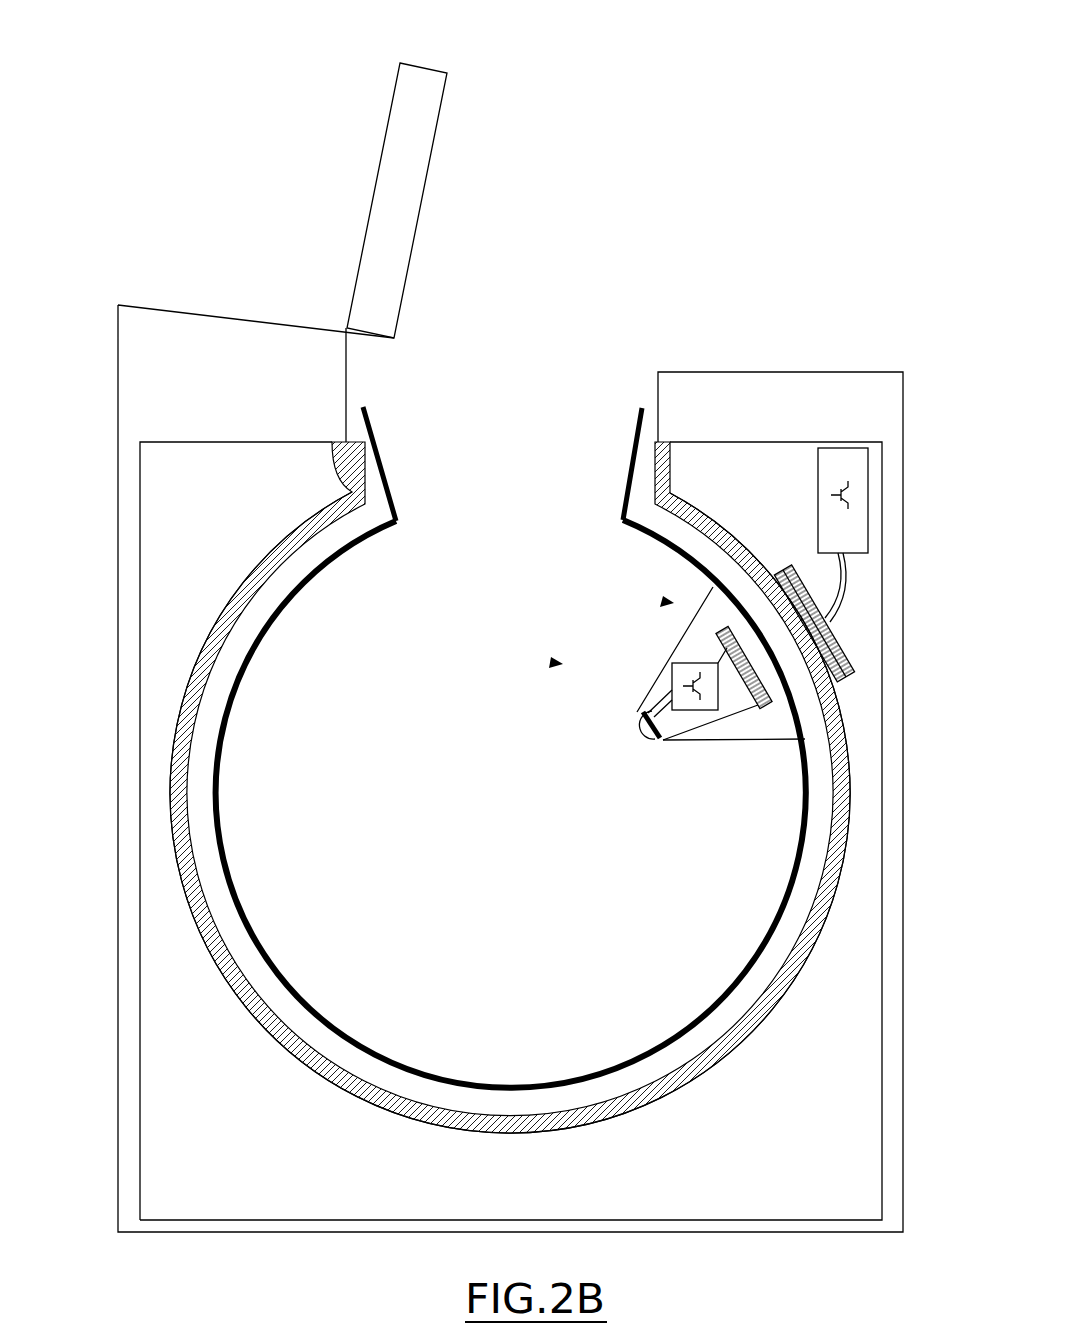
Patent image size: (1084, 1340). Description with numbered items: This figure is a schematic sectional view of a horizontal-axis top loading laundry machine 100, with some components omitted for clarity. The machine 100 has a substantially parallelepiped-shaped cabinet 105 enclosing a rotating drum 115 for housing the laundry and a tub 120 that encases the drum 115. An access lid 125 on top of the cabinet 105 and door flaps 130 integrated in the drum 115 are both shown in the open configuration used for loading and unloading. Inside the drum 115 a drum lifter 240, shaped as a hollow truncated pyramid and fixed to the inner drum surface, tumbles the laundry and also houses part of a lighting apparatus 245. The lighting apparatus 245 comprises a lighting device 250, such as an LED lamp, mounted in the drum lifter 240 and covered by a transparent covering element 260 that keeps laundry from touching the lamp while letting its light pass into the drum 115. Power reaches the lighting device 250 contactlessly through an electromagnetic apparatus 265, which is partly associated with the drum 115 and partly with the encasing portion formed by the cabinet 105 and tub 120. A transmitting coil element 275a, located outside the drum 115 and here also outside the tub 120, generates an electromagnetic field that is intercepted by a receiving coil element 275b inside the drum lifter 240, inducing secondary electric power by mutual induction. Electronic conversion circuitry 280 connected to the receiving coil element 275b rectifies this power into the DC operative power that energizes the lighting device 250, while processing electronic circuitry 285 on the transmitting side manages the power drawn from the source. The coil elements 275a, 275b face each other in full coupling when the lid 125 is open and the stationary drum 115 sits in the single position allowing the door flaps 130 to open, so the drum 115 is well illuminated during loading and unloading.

The machine 100 is at (200, 104).
The cabinet 105 is at (703, 368).
The drum 115 is at (623, 1075).
The tub 120 is at (775, 993).
The access lid 125 is at (428, 152).
The door flaps 130 is at (632, 470).
The drum lifter 240 is at (670, 662).
The lighting apparatus 245 is at (555, 663).
The lighting device 250 is at (690, 710).
The covering element 260 is at (637, 717).
The electromagnetic apparatus 265 is at (665, 600).
The transmitting coil element 275a is at (797, 577).
The receiving coil element 275b is at (663, 740).
The electronic conversion circuitry 280 is at (655, 745).
The processing electronic circuitry 285 is at (817, 448).